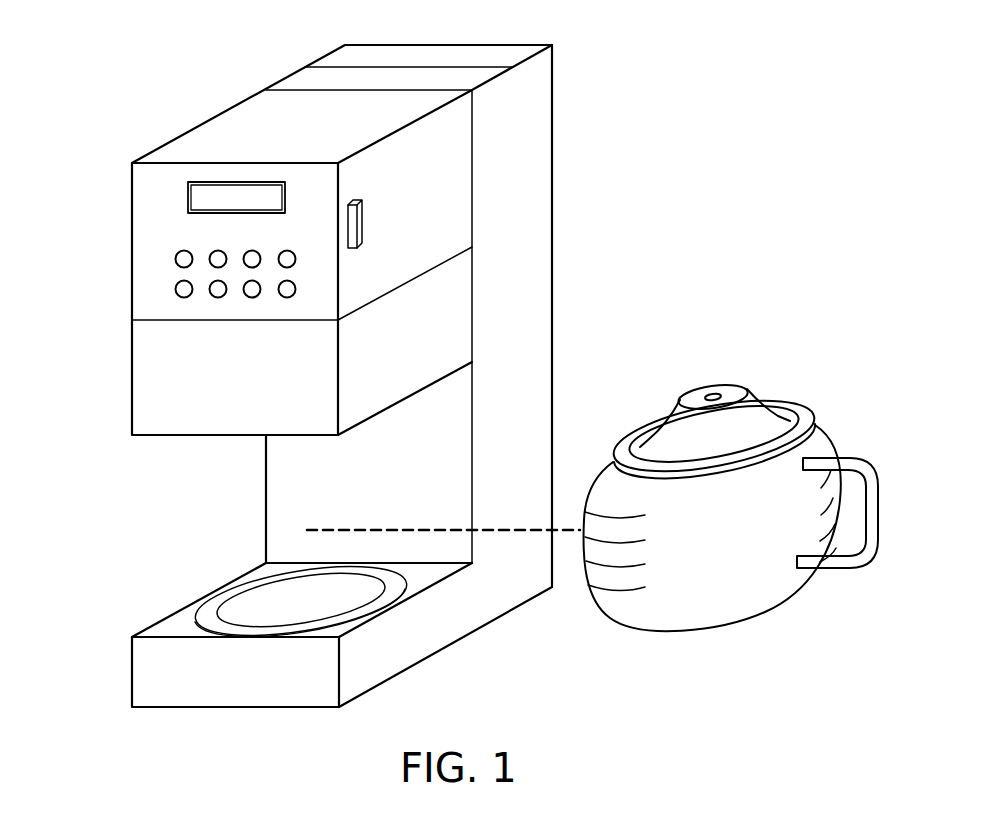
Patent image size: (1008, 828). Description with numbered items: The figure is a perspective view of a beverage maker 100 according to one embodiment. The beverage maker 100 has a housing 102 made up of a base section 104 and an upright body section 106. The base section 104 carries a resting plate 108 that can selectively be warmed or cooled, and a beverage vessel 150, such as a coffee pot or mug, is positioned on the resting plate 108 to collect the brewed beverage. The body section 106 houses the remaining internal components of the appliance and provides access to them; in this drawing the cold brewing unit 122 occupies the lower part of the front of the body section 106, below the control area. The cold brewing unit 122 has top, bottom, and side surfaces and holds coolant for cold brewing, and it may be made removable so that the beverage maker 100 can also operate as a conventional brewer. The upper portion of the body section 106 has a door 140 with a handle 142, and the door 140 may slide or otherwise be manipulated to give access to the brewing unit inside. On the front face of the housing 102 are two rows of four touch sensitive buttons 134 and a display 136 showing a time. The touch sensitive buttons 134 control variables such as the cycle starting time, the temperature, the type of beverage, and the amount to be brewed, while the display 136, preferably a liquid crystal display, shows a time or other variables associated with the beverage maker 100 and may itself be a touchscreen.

The beverage maker 100 is at (622, 69).
The housing 102 is at (578, 295).
The base section 104 is at (127, 572).
The body section 106 is at (127, 163).
The resting plate 108 is at (225, 623).
The cold brewing unit 122 is at (183, 393).
The touch sensitive buttons 134 is at (184, 262).
The display 136 is at (200, 197).
The door 140 is at (455, 148).
The handle 142 is at (362, 222).
The beverage vessel 150 is at (798, 391).